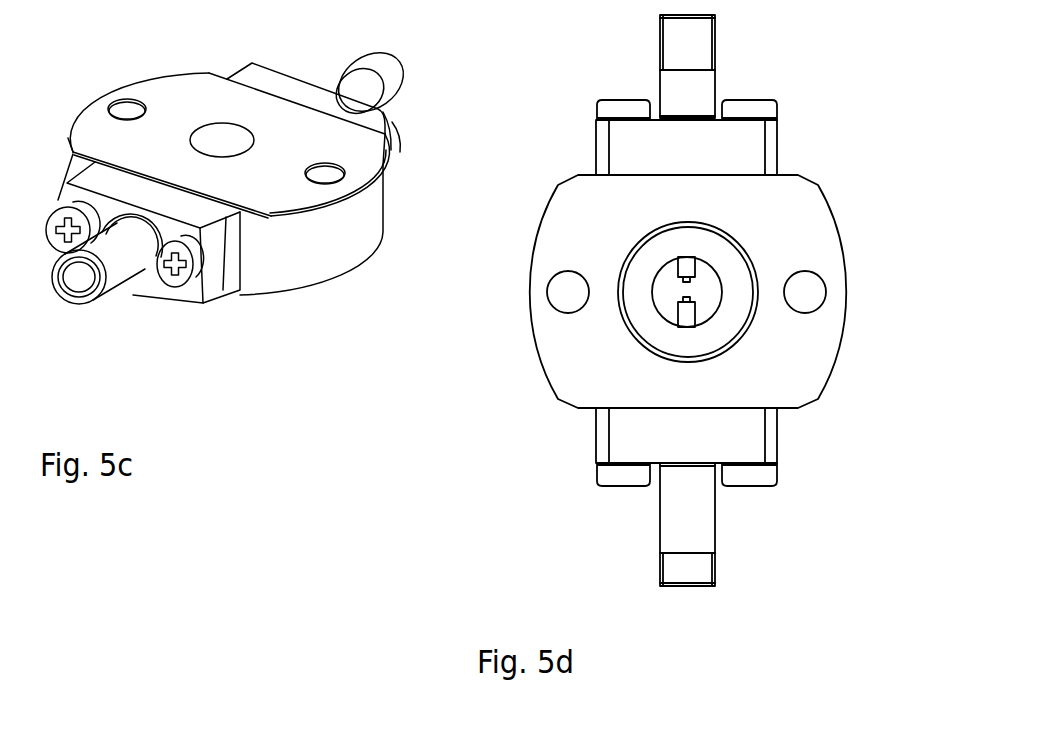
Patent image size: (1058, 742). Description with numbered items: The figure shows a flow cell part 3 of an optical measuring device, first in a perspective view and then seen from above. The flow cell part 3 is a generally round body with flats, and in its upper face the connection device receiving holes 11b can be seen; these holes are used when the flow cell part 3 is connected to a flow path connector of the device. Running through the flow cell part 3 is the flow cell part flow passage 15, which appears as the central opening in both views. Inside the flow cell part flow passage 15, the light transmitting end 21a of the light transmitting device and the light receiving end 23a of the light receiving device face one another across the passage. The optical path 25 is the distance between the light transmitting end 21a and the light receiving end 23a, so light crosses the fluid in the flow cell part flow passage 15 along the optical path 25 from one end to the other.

In FIG. 5C, the flow cell part 3 is at (337, 332).
In FIG. 5D, the flow cell part 3 is at (405, 442).
In FIG. 5C, the connection device receiving holes 11b is at (492, 135).
In FIG. 5D, the connection device receiving holes 11b is at (568, 271).
In FIG. 5D, the flow cell part flow passage 15 is at (717, 298).
In FIG. 5D, the light transmitting end 21a is at (685, 282).
In FIG. 5D, the light receiving end 23a is at (680, 303).
In FIG. 5D, the optical path 25 is at (685, 287).